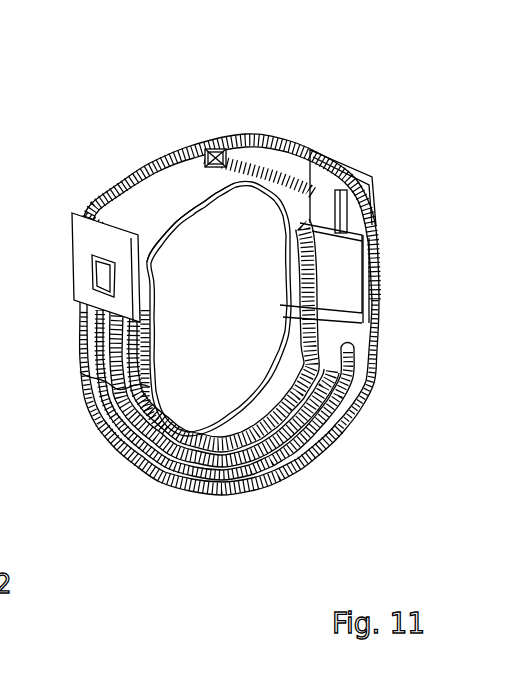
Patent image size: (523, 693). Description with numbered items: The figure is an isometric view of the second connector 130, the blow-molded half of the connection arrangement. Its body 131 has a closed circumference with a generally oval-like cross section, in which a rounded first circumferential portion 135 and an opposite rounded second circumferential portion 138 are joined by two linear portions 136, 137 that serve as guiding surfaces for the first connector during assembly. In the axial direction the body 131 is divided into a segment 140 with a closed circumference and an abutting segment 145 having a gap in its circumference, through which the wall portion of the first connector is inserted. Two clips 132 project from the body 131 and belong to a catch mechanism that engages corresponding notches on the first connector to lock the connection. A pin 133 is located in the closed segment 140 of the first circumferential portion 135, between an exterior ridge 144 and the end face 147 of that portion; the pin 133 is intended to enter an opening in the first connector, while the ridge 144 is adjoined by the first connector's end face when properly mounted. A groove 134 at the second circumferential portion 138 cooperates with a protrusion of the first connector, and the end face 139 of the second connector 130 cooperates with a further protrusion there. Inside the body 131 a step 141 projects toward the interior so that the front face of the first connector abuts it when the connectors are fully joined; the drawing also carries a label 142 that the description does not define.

The second connector 130 is at (150, 135).
The body 131 is at (372, 390).
The clips 132 is at (377, 188).
The pin 133 is at (215, 149).
The groove 134 is at (283, 450).
The first circumferential portion 135 is at (198, 203).
The linear portion 136 is at (370, 298).
The linear portion 137 is at (91, 360).
The second circumferential portion 138 is at (210, 491).
The end face 139 is at (320, 455).
The segment 140 is at (181, 178).
The step 141 is at (310, 373).
The opening edge 142 is at (267, 387).
The ridge 144 is at (146, 180).
The abutting segment 145 is at (353, 292).
The end face 147 is at (238, 187).